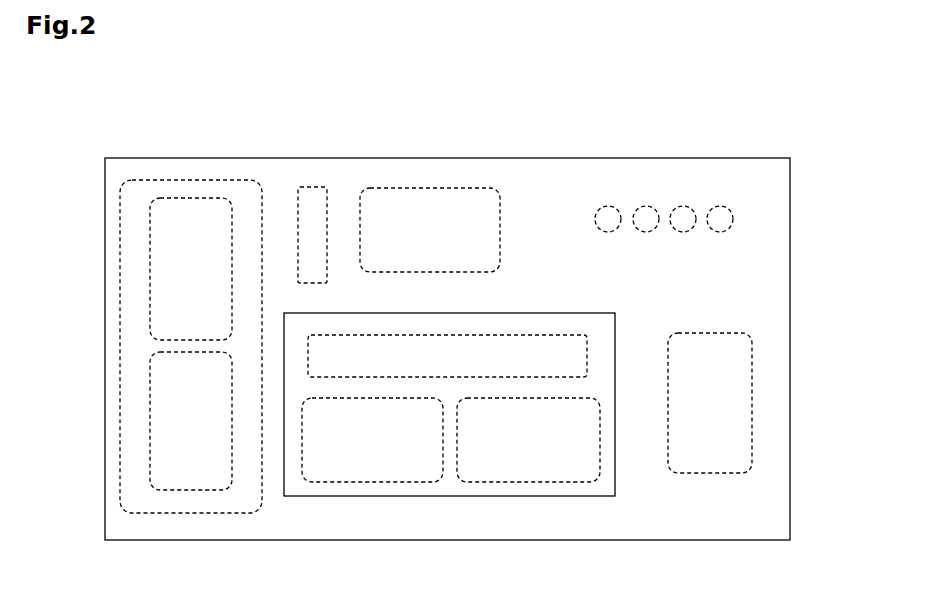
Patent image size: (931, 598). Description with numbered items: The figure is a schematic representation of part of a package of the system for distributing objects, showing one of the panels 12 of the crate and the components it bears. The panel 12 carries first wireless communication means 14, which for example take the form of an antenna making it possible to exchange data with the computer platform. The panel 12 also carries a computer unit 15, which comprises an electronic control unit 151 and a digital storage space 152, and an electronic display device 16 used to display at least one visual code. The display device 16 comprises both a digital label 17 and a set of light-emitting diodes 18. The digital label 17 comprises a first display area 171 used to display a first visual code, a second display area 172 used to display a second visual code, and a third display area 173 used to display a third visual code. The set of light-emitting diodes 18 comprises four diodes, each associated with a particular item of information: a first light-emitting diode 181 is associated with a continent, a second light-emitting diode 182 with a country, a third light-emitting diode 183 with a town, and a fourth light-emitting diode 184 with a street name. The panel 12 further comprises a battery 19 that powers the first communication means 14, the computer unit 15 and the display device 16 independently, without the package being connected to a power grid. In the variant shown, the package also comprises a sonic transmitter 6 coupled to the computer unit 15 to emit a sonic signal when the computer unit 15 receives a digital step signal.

The panel 12 is at (493, 151).
The sonic transmitter 6 is at (308, 207).
The first wireless communication means 14 is at (697, 458).
The computer unit 15 is at (169, 171).
The electronic control unit 151 is at (170, 255).
The digital storage space 152 is at (165, 394).
The electronic display device 16 is at (557, 346).
The digital label 17 is at (466, 439).
The set of light-emitting diodes 18 is at (680, 192).
The battery 19 is at (370, 205).
The first display area 171 is at (362, 467).
The second display area 172 is at (570, 462).
The third display area 173 is at (521, 340).
The first light-emitting diode 181 is at (605, 221).
The second light-emitting diode 182 is at (646, 212).
The third light-emitting diode 183 is at (682, 222).
The fourth light-emitting diode 184 is at (723, 222).